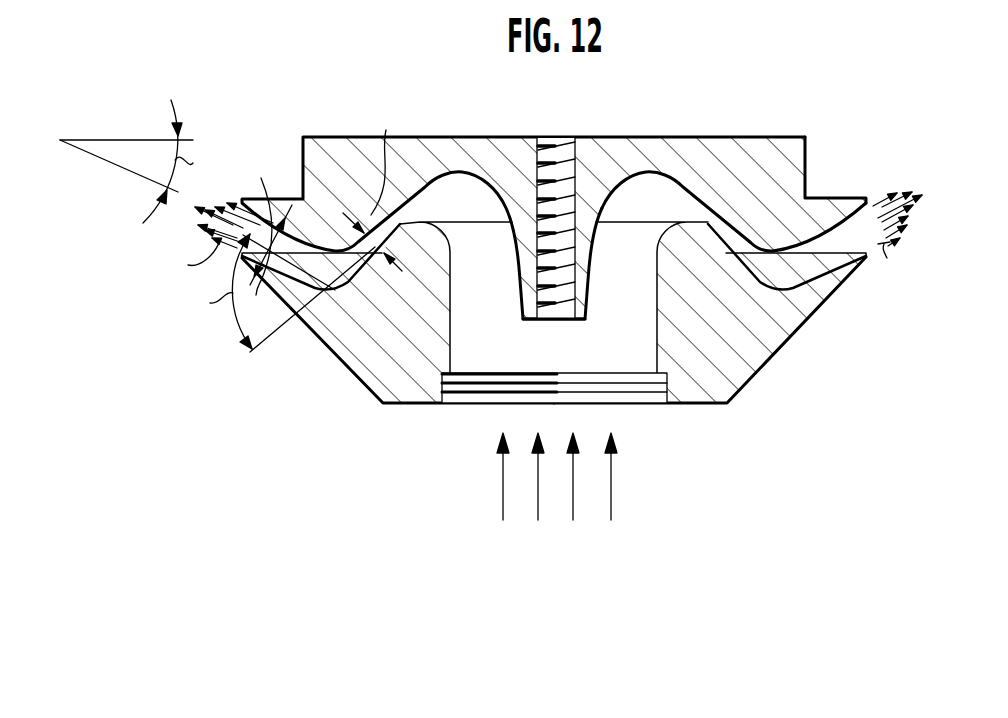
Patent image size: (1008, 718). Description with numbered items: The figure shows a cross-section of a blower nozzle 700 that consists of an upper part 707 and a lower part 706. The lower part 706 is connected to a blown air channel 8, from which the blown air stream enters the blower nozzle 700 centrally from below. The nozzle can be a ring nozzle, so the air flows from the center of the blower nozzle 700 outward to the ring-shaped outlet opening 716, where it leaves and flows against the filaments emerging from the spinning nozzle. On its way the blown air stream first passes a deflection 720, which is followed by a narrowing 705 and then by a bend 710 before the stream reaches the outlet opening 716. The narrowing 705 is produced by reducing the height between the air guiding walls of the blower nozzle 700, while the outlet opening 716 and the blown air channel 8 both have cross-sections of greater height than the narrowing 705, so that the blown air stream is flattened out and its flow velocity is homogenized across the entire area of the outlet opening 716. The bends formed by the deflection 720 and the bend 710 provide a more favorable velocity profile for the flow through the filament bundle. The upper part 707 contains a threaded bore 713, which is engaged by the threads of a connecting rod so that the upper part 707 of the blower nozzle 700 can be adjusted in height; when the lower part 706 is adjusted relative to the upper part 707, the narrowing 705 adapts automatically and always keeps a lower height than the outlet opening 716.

The blower nozzle 700 is at (768, 448).
The narrowing 705 is at (733, 240).
The lower part 706 is at (377, 347).
The upper part 707 is at (340, 160).
The bend 710 is at (787, 273).
The threaded bore 713 is at (573, 167).
The outlet opening 716 is at (852, 235).
The deflection 720 is at (653, 190).
The blown air channel 8 is at (660, 388).